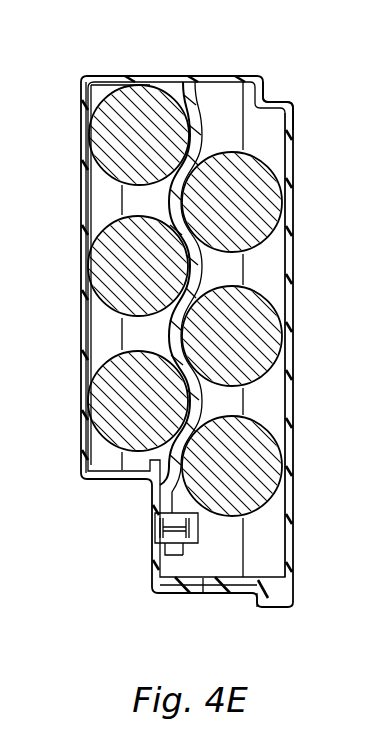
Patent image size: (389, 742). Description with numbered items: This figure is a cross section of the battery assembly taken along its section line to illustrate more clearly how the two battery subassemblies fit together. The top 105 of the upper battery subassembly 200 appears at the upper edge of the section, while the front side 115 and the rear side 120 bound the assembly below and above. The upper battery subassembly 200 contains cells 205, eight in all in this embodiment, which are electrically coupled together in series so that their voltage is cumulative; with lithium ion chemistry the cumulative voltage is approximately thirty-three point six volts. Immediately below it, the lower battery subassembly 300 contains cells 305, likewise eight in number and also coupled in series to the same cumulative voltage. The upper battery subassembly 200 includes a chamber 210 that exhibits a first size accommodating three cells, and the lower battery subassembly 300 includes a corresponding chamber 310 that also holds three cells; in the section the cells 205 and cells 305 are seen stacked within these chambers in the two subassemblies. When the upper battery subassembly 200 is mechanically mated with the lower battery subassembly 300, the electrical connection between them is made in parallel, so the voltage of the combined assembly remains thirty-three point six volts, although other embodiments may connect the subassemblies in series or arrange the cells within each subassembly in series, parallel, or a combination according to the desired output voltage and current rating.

The top 105 is at (82, 310).
The front side 115 is at (223, 596).
The rear side 120 is at (214, 75).
The upper battery subassembly 200 is at (82, 458).
The cells 205 is at (82, 130).
The chamber 210 is at (103, 203).
The lower battery subassembly 300 is at (295, 384).
The cells 305 is at (282, 170).
The chamber 310 is at (280, 107).